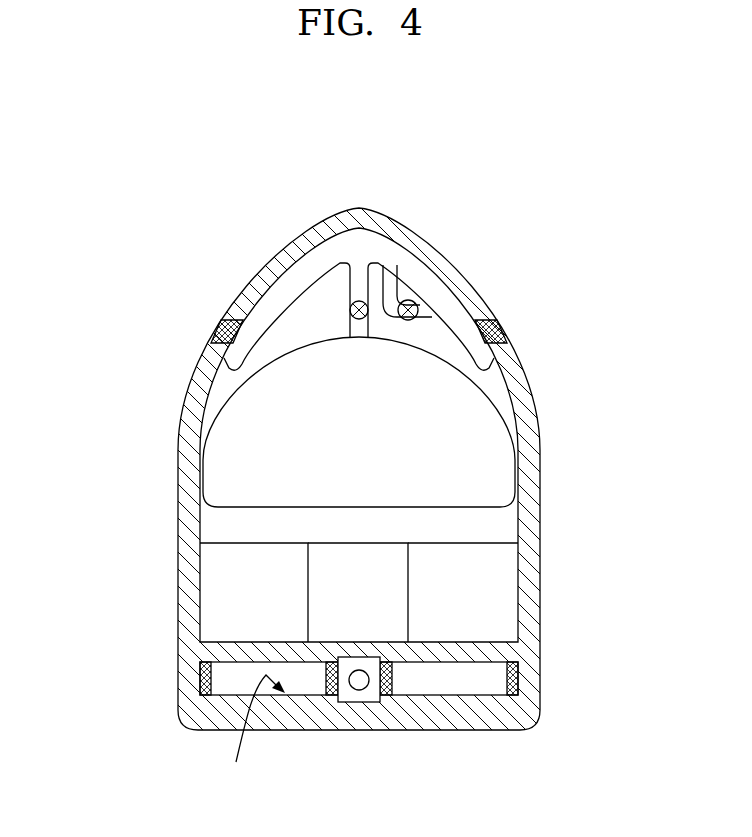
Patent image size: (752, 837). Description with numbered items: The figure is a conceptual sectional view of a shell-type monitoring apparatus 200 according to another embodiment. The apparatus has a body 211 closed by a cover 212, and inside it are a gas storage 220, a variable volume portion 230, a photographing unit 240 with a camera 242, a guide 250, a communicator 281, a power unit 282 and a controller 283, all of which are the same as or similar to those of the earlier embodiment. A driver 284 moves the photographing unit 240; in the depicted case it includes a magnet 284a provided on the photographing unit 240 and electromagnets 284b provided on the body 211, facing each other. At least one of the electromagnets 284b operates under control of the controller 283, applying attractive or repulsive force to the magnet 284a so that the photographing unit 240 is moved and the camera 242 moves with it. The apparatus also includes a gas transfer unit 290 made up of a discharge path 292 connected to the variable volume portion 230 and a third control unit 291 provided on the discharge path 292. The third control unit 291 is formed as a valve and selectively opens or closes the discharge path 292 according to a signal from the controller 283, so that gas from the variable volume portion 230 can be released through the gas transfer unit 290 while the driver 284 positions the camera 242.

The shell-type monitoring apparatus 200 is at (375, 142).
The body 211 is at (541, 505).
The cover 212 is at (412, 240).
The gas storage 220 is at (485, 417).
The variable volume portion 230 is at (357, 247).
The photographing unit 240 is at (349, 702).
The camera 242 is at (363, 692).
The guide 250 is at (250, 734).
The communicator 281 is at (252, 585).
The power unit 282 is at (358, 585).
The controller 283 is at (465, 583).
The driver 284 is at (334, 637).
The magnet 284a is at (310, 658).
The electromagnet 284b is at (200, 674).
The gas transfer unit 290 is at (501, 278).
The third control unit 291 is at (412, 295).
The discharge path 292 is at (423, 328).